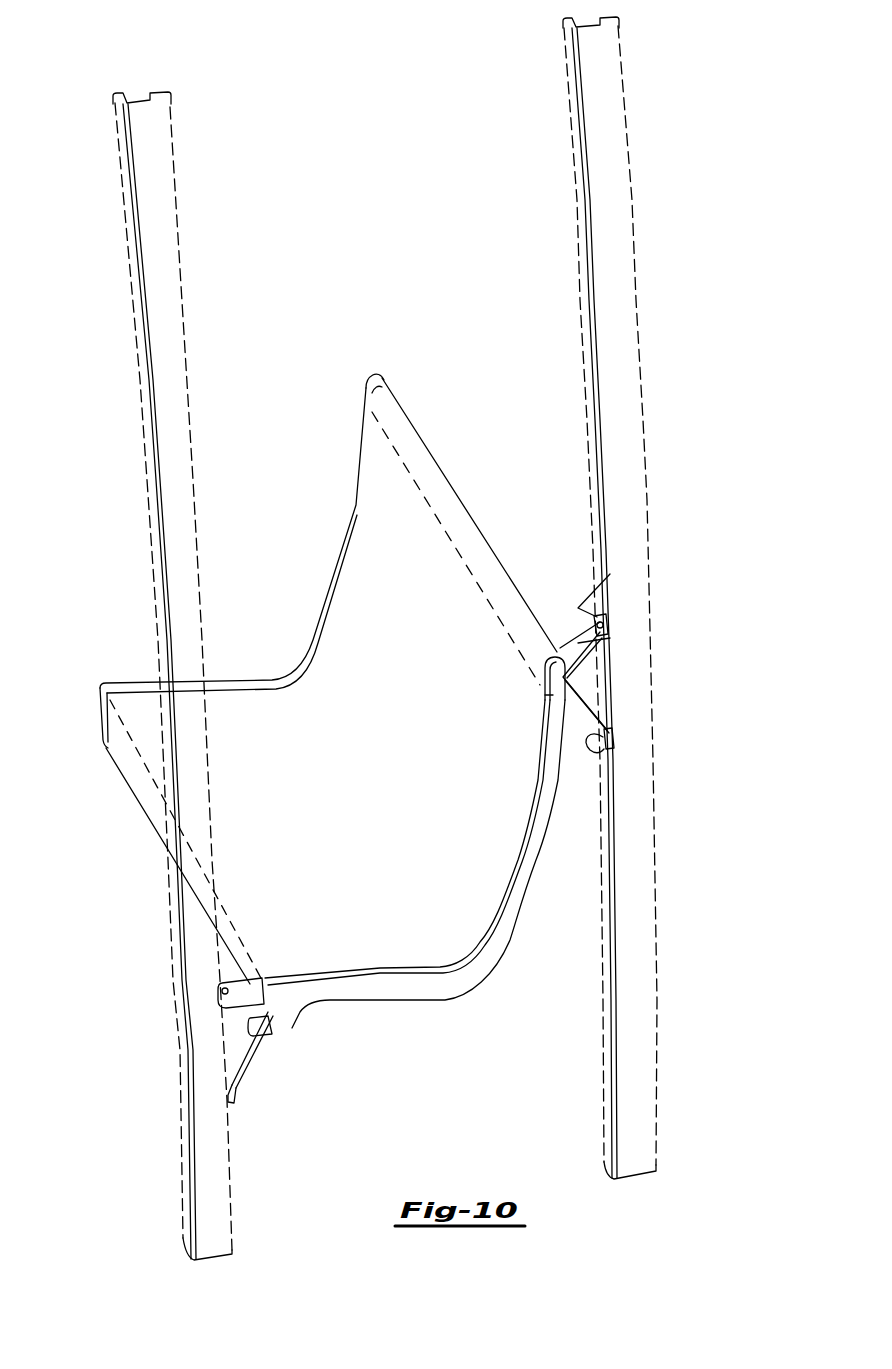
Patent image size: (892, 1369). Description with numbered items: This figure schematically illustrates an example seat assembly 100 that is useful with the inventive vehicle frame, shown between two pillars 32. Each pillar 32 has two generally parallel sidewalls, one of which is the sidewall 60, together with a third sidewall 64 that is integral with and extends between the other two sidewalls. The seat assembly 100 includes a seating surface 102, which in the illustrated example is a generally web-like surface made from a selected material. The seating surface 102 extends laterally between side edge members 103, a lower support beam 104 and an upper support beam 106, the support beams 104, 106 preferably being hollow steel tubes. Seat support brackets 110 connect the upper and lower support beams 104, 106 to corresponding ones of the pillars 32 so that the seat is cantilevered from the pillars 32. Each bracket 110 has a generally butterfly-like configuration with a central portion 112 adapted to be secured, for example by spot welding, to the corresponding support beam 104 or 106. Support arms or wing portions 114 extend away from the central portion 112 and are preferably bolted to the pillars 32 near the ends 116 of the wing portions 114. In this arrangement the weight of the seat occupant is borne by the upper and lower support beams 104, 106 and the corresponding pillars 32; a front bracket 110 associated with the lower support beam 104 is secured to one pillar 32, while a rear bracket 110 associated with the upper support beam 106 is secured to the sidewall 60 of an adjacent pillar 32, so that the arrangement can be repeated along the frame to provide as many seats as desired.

The pillar 32 is at (150, 257).
The sidewall 60 is at (183, 1117).
The third sidewall 64 is at (210, 1146).
The seat assembly 100 is at (348, 272).
The seating surface 102 is at (388, 552).
The side edge members 103 is at (338, 547).
The lower support beam 104 is at (127, 745).
The upper support beam 106 is at (455, 512).
The seat support bracket 110 is at (553, 603).
The central portion 112 is at (578, 672).
The wing portions 114 is at (598, 640).
The ends 116 is at (610, 574).